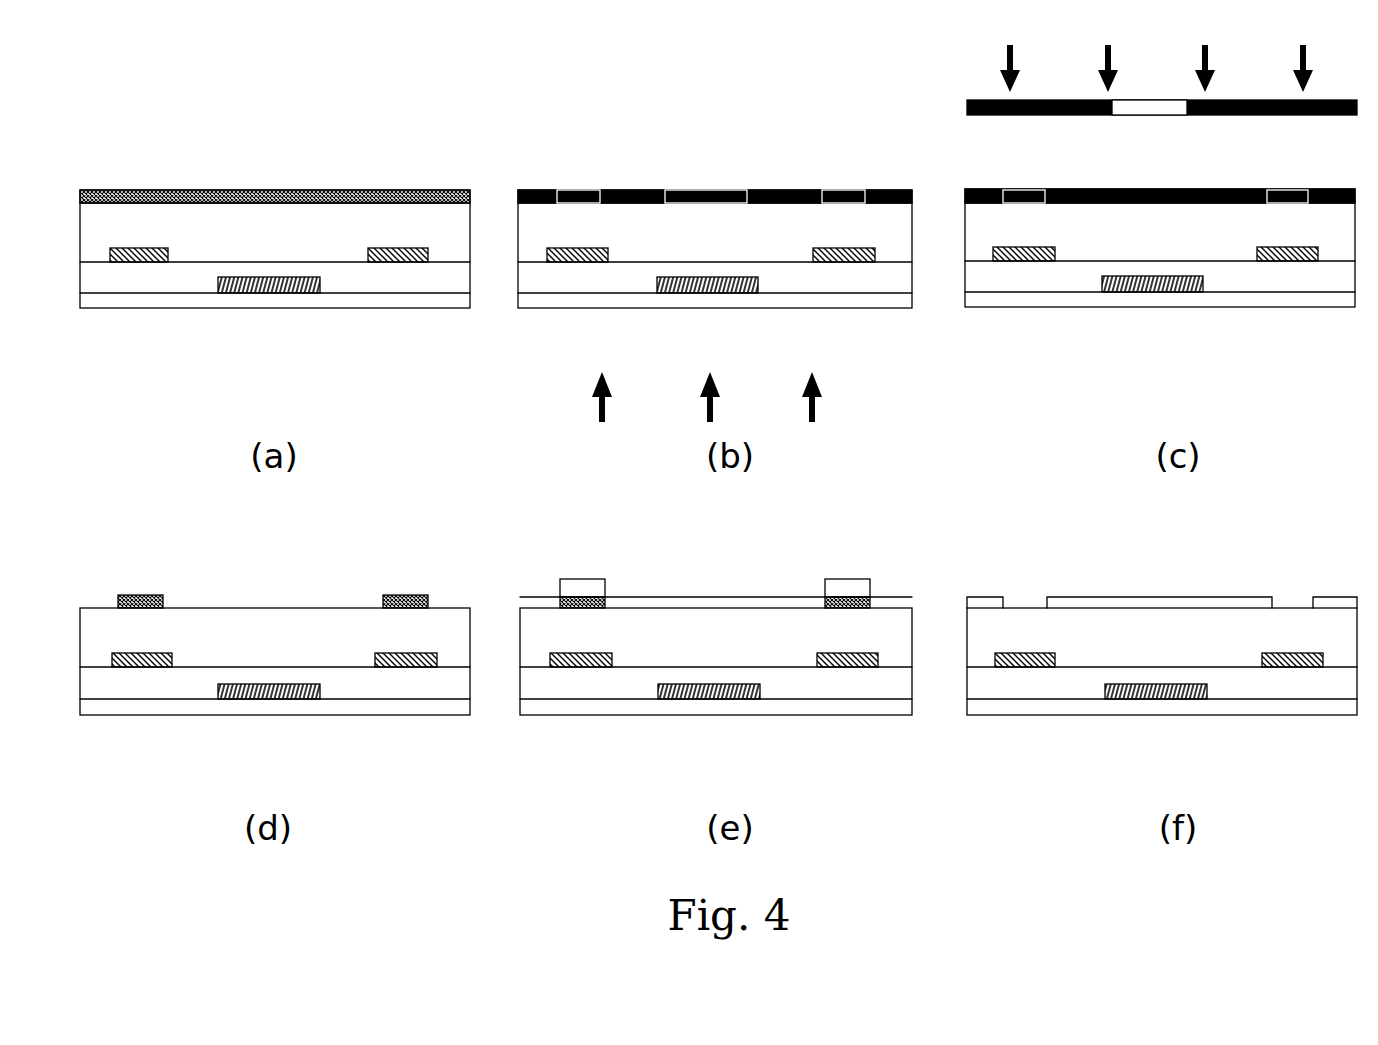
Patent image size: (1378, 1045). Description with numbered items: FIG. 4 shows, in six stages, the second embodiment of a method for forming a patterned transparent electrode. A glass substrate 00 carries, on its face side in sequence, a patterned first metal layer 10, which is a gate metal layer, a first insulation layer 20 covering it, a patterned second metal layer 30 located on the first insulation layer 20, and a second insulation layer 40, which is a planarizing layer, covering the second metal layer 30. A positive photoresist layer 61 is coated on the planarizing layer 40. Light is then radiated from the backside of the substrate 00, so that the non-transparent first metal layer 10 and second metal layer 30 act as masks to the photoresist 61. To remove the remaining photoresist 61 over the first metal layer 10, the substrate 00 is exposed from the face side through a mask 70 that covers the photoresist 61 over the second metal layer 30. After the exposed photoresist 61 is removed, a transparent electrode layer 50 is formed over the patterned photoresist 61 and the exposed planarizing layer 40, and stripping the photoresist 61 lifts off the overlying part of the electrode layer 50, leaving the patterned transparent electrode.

The glass substrate 00 is at (422, 300).
The first metal layer 10 is at (268, 284).
The first insulation layer 20 is at (188, 280).
The second metal layer 30 is at (120, 262).
The second insulation layer 40 is at (305, 228).
The transparent electrode layer 50 is at (585, 588).
The positive photoresist layer 61 is at (150, 190).
The photomask 70 is at (1335, 117).